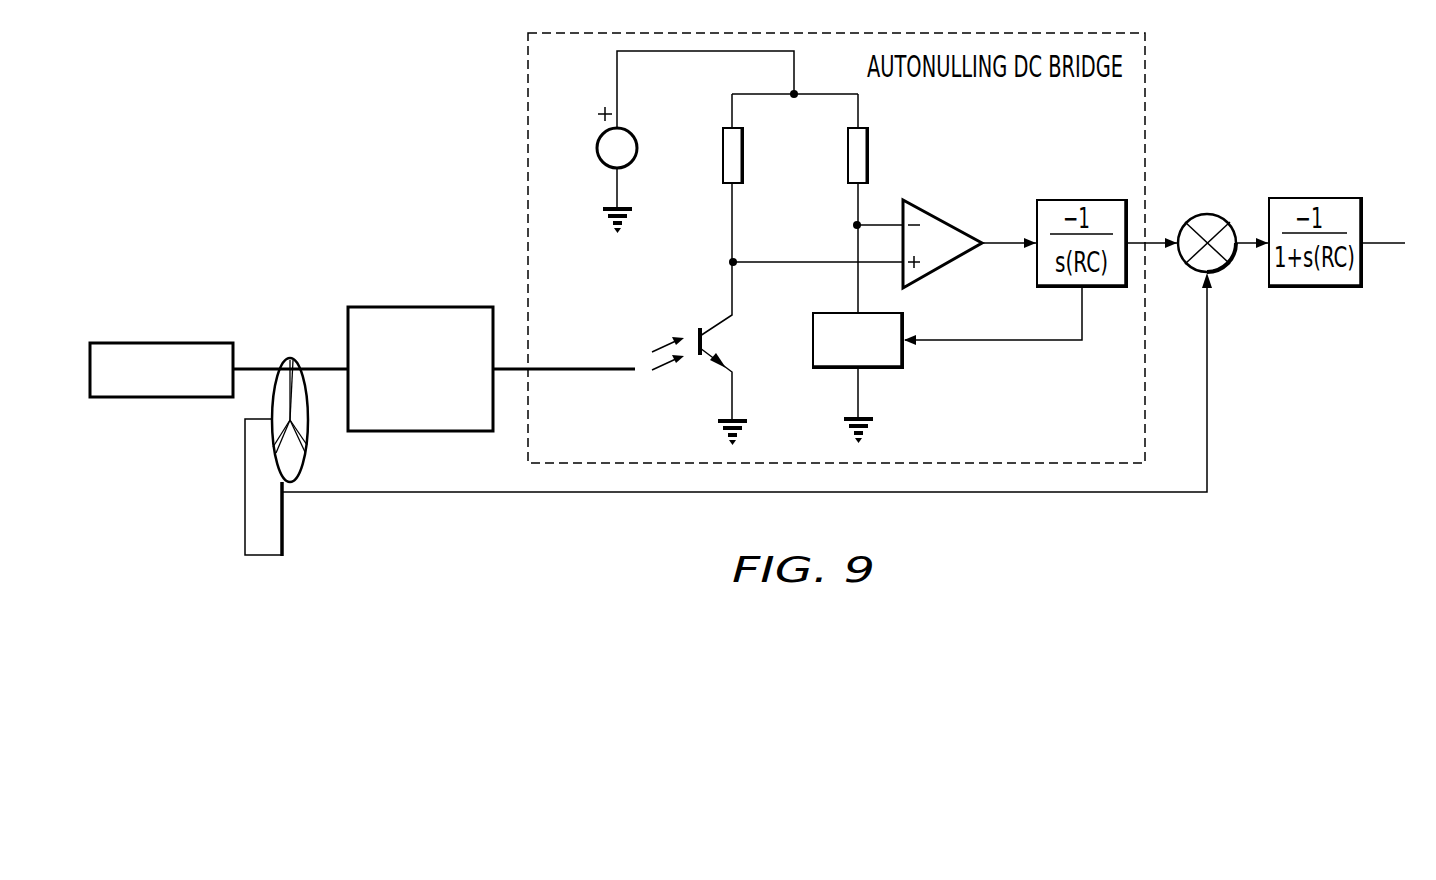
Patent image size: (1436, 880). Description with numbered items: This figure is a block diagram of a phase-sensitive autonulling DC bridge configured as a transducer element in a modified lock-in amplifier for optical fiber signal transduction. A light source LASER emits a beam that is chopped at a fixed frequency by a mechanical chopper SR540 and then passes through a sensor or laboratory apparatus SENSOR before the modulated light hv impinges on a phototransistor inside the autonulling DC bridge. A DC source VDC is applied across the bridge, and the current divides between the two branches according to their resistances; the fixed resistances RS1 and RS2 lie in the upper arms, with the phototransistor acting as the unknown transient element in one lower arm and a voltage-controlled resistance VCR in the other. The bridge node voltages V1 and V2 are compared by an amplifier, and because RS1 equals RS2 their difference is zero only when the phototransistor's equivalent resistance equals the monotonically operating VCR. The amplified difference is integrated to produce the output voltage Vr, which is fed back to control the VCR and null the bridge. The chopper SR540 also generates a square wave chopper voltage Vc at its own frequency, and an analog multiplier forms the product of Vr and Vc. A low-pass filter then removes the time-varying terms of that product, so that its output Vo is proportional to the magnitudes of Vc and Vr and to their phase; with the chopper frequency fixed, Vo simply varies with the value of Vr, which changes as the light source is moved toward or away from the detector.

The laser LASER is at (161, 370).
The mechanical chopper SR540 is at (277, 527).
The sensor or laboratory apparatus SENSOR is at (420, 369).
The light (photons) incident on phototransistor hv is at (668, 368).
The DC voltage source VDC is at (704, 142).
The bridge resistance RS1 is at (723, 155).
The bridge resistance RS2 is at (868, 158).
The input voltage V1 is at (789, 264).
The bridge node voltage V2 is at (848, 227).
The voltage-controlled resistance VCR is at (858, 378).
The output voltage Vr is at (993, 336).
The chopper voltage Vc is at (759, 382).
The output of the low-pass filter Vo is at (1396, 242).